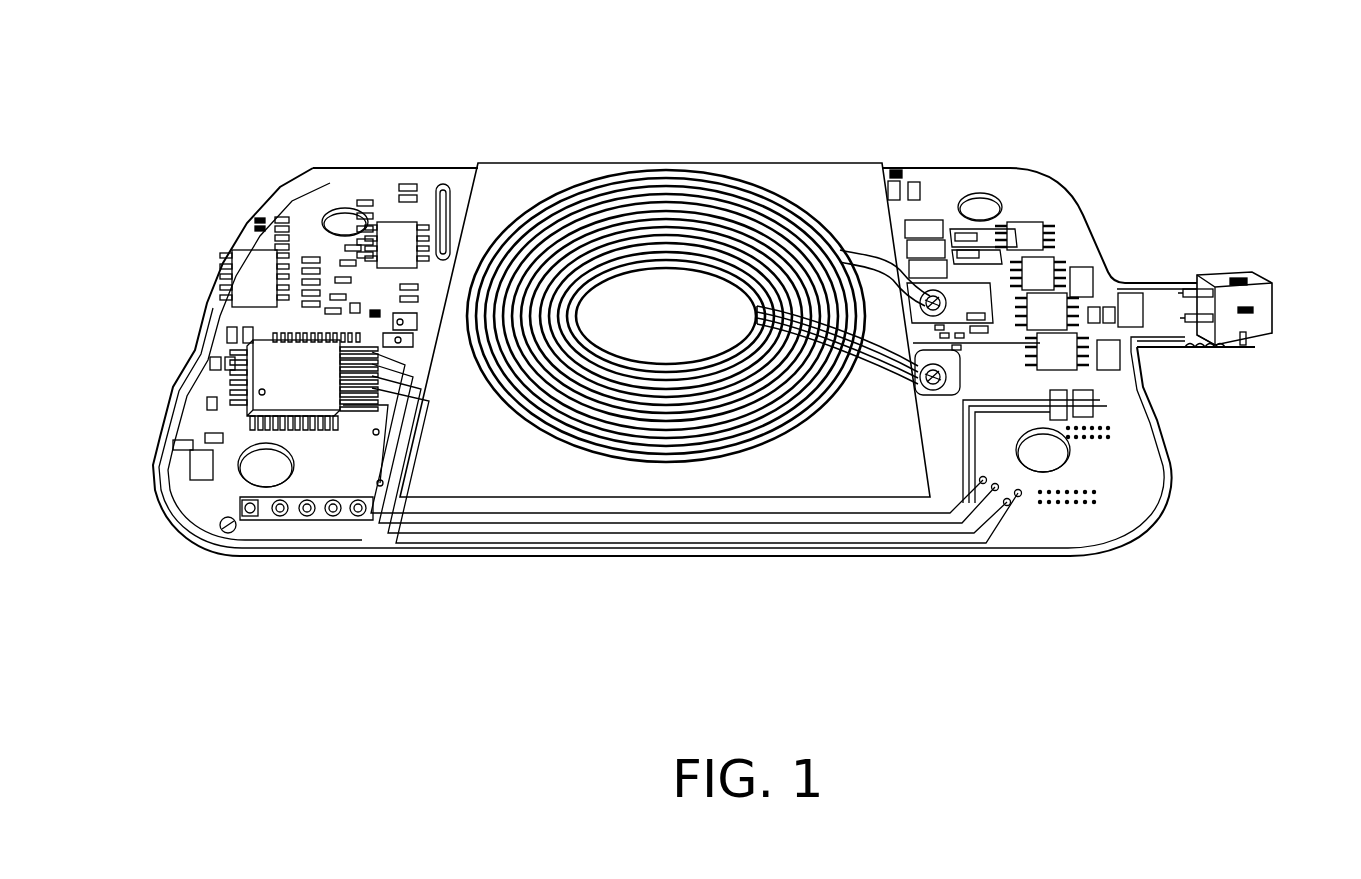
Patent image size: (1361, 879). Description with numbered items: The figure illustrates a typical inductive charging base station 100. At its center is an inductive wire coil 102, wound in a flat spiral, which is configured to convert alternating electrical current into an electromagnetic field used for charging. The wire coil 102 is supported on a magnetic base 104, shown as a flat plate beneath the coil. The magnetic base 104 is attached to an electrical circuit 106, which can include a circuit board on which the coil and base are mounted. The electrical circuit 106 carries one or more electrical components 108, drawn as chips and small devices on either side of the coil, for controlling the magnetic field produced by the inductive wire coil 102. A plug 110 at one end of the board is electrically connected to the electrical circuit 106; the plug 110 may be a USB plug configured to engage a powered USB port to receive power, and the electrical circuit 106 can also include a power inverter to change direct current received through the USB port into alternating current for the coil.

The inductive charging base station 100 is at (233, 96).
The inductive wire coil 102 is at (705, 186).
The magnetic base 104 is at (540, 180).
The electrical circuit 106 is at (405, 190).
The electrical components 108 is at (270, 377).
The plug 110 is at (1250, 283).